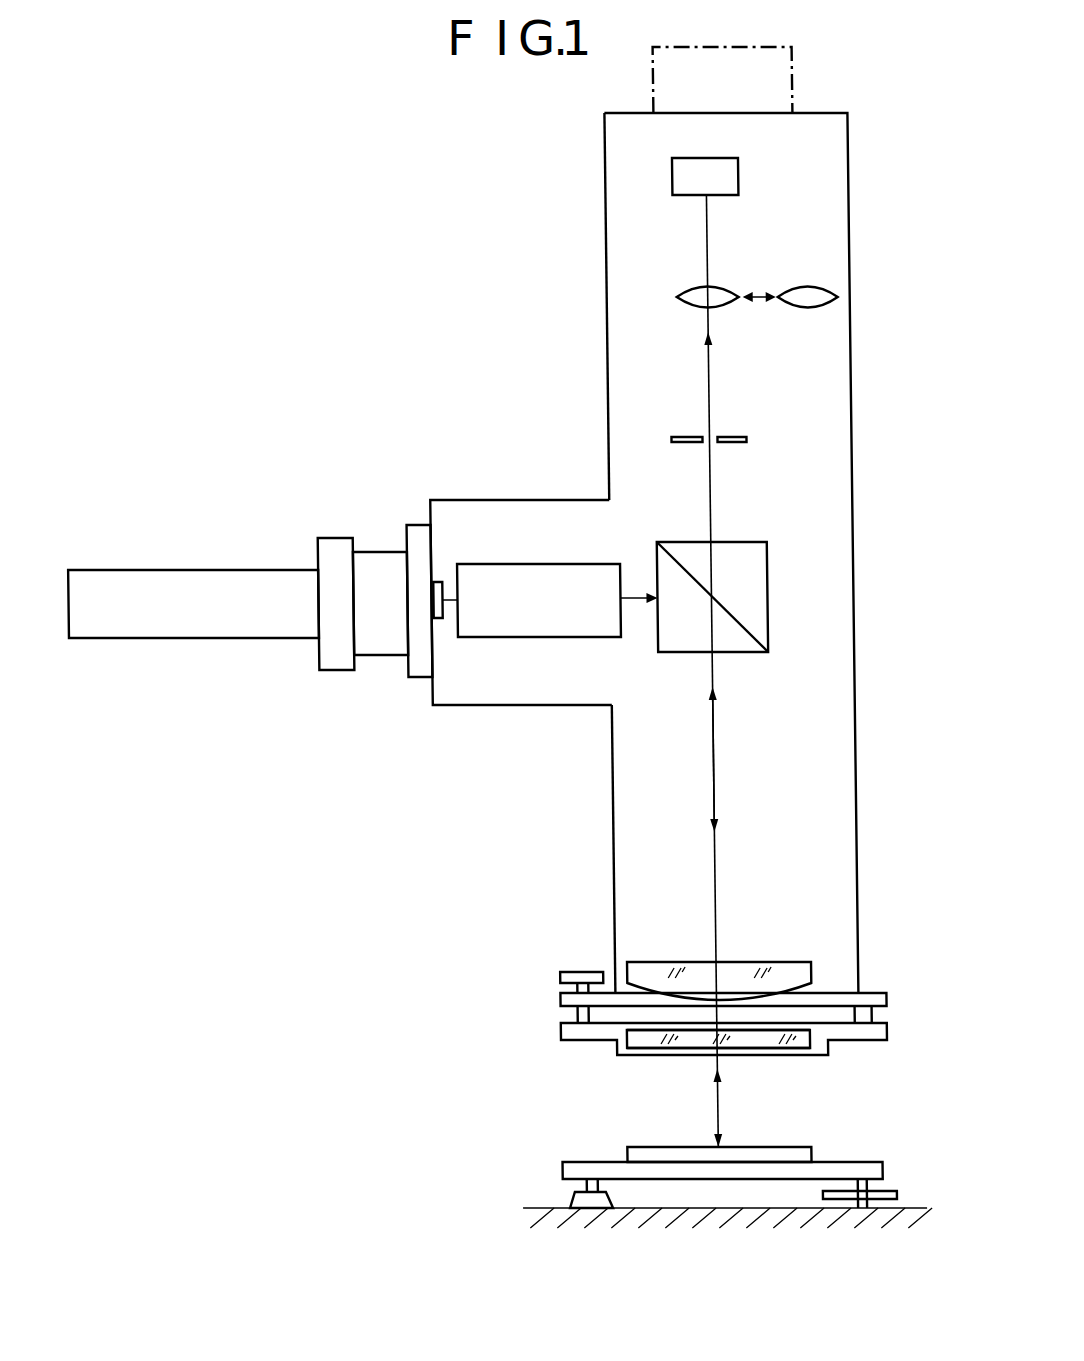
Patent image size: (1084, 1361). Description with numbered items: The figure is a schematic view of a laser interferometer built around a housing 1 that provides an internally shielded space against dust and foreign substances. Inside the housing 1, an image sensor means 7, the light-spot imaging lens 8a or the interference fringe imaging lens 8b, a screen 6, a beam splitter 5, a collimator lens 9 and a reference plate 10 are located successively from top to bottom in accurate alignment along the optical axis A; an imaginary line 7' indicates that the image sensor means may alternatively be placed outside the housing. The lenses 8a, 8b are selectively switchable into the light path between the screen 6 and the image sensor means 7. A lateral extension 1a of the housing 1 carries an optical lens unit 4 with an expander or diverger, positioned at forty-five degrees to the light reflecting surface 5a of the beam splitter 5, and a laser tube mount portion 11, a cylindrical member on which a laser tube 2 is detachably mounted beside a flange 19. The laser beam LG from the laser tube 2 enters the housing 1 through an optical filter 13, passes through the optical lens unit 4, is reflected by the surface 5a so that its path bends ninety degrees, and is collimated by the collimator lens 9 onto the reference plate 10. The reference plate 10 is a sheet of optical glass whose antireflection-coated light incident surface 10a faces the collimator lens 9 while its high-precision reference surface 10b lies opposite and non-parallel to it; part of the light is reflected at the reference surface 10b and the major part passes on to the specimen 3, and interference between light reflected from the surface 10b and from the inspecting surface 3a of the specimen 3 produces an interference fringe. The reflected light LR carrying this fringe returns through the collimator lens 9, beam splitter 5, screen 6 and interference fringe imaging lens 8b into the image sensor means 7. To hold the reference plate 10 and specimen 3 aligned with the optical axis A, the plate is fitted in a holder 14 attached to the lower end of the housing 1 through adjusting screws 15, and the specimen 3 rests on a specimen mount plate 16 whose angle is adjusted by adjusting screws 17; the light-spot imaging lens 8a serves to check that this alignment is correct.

The housing 1 is at (850, 418).
The lateral extension 1a is at (492, 500).
The laser tube 2 is at (180, 570).
The specimen 3 is at (784, 1143).
The inspecting surface 3a is at (651, 1147).
The optical lens unit 4 is at (510, 630).
The beam splitter 5 is at (760, 587).
The light reflecting surface 5a is at (730, 638).
The screen 6 is at (739, 443).
The image sensor means 7 is at (705, 131).
The signal processing unit 7' is at (758, 72).
The light-spot imaging lens 8a is at (686, 290).
The interference fringe imaging lens 8b is at (799, 290).
The collimator lens 9 is at (678, 962).
The reference plate 10 is at (606, 1048).
The light incident surface 10a is at (757, 1030).
The reference surface 10b is at (762, 1048).
The laser tube mount portion 11 is at (371, 552).
The optical filter 13 is at (427, 612).
The holder 14 is at (549, 1037).
The adjusting screws 15 is at (563, 972).
The specimen mount plate 16 is at (548, 1172).
The adjusting screws 17 is at (875, 1192).
The mounting flange 19 is at (323, 538).
The optical axis A is at (706, 500).
The laser beam LG is at (624, 607).
The reflected light LR is at (705, 763).